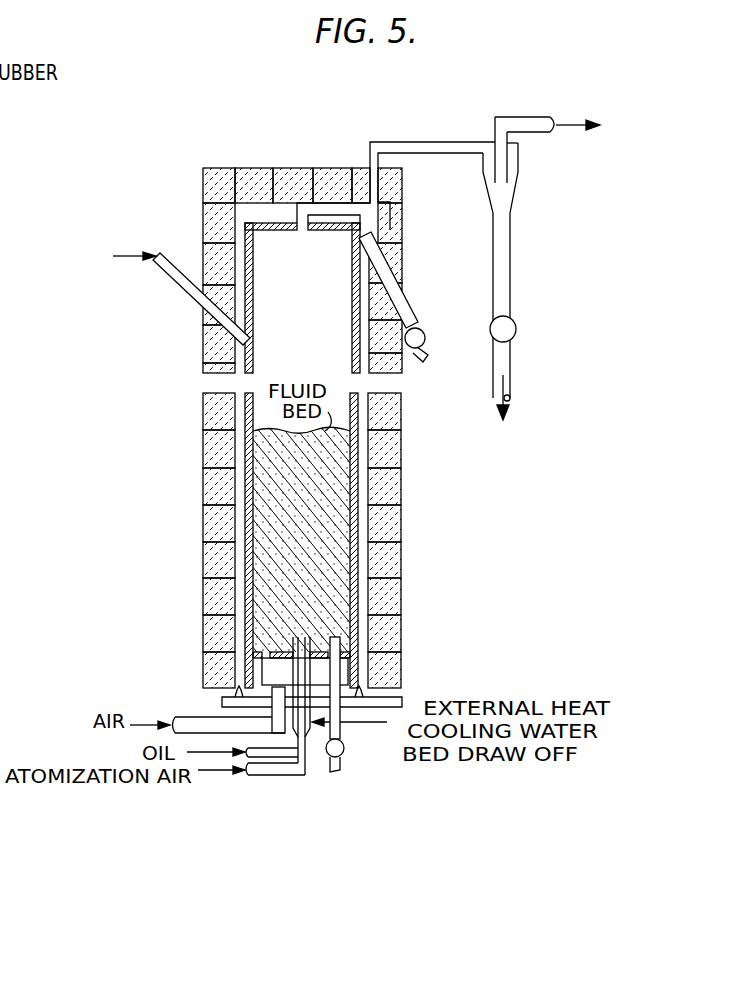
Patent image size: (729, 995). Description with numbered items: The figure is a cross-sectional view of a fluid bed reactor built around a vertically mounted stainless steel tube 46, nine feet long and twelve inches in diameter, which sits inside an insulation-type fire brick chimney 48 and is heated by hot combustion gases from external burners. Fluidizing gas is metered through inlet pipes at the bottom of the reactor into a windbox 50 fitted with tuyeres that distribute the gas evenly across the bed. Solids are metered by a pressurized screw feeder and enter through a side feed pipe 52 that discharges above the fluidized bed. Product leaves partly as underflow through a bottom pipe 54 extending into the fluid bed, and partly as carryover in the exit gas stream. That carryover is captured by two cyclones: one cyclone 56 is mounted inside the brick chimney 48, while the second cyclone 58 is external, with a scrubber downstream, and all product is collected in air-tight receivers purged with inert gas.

The stainless steel tube 46 is at (272, 362).
The brick chimney 48 is at (208, 638).
The windbox 50 is at (272, 669).
The side feed pipe 52 is at (173, 279).
The bottom pipe 54 is at (335, 673).
The cyclone 56 is at (385, 216).
The second cyclone 58 is at (507, 195).